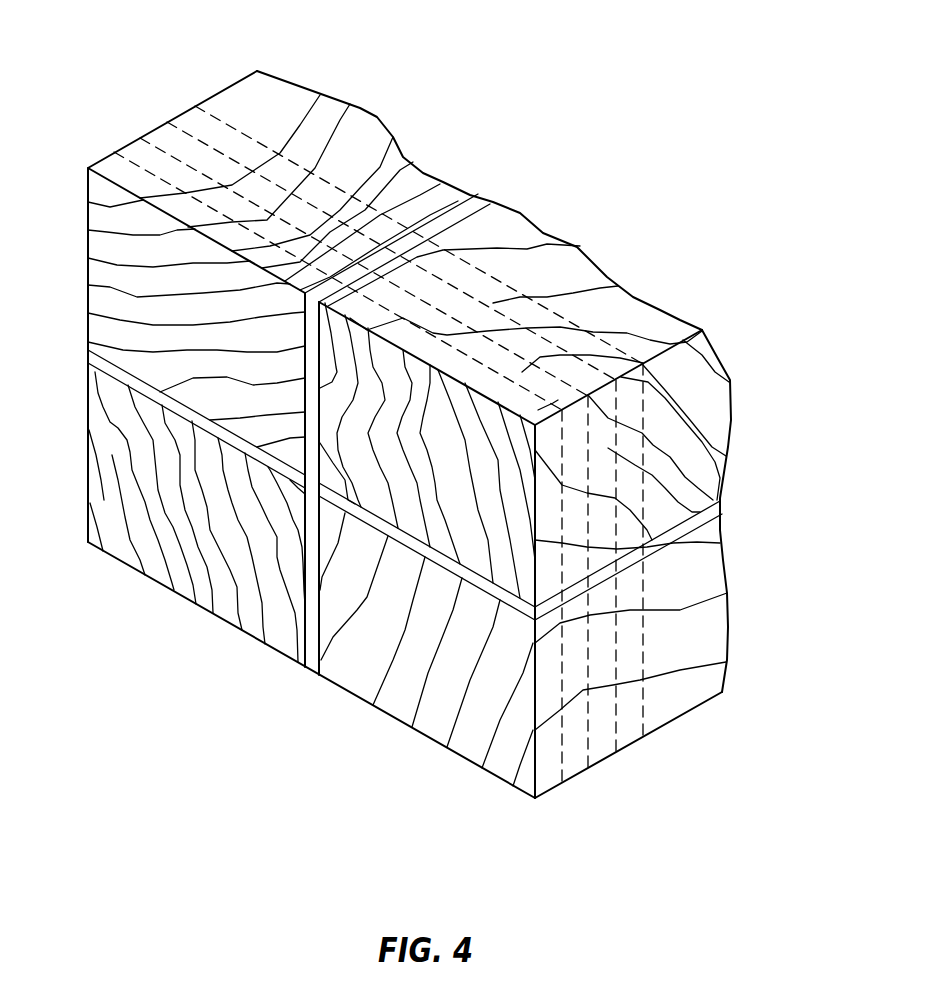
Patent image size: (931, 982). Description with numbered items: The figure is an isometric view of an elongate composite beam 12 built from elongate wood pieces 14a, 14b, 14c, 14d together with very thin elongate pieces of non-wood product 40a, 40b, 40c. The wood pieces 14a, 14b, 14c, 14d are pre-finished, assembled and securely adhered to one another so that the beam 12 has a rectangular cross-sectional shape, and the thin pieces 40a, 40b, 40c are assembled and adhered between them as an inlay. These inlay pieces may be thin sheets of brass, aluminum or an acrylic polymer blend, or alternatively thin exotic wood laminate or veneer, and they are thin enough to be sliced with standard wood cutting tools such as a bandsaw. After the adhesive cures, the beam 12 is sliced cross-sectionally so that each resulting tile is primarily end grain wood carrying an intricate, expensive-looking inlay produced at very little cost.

The elongate composite beam 12 is at (409, 407).
The elongate wood piece 14a is at (287, 271).
The elongate wood piece 14b is at (524, 503).
The elongate wood piece 14c is at (662, 661).
The elongate wood piece 14d is at (161, 517).
The elongate piece of non-wood product 40a is at (437, 232).
The elongate piece of non-wood product 40b is at (274, 483).
The elongate piece of non-wood product 40c is at (666, 559).